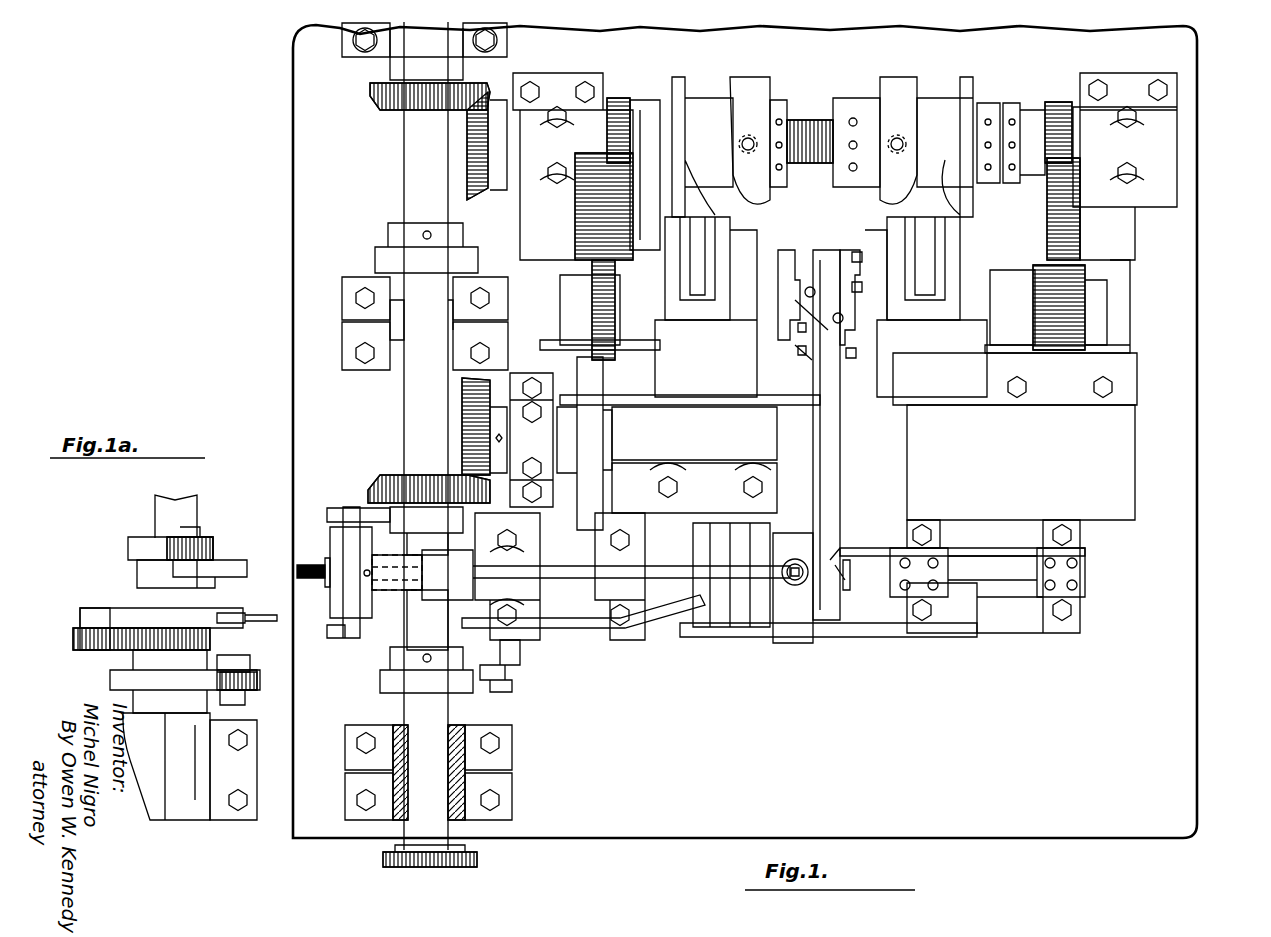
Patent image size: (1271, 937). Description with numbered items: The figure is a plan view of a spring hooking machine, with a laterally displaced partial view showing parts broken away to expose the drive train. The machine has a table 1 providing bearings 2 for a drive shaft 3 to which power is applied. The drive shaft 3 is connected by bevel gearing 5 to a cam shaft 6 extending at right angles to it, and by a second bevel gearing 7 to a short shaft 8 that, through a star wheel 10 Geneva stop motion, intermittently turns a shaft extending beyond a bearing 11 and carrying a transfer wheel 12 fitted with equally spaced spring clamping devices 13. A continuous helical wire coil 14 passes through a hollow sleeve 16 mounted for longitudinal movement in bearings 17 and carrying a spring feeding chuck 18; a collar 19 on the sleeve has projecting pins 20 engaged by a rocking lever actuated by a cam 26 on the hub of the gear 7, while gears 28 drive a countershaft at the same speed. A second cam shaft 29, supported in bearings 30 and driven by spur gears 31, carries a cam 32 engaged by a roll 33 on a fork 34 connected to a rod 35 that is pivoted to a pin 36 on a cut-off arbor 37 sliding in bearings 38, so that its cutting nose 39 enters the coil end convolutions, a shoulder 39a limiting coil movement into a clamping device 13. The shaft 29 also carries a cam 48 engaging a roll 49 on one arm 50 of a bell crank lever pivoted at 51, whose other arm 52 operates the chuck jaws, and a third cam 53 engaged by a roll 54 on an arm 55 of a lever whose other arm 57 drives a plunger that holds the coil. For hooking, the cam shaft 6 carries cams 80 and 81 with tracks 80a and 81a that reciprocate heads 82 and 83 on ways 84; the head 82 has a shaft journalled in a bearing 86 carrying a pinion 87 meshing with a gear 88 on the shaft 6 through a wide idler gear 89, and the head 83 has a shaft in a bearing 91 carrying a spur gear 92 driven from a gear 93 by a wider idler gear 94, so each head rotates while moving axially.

In FIG. 1, the table 1 is at (1188, 720).
In FIG. 1, the bearings 2 is at (500, 770).
In FIG. 1, the drive shaft 3 is at (365, 860).
In FIG. 1, the bevel gearing 5 is at (385, 110).
In FIG. 1, the cam shaft 6 is at (802, 135).
In FIG. 1, the bevel gearing 7 is at (375, 495).
In FIG. 1, the short shaft 8 is at (465, 418).
In FIG. 1, the star wheel 10 is at (597, 470).
In FIG. 1, the bearing 11 is at (745, 460).
In FIG. 1, the transfer wheel 12 is at (828, 462).
In FIG. 1, the spring clamping devices 13 is at (832, 335).
In FIG. 1, the helical wire coil 14 is at (300, 562).
In FIG. 1, the hollow sleeve 16 is at (385, 620).
In FIG. 1, the bearings 17 is at (482, 565).
In FIG. 1, the spring feeding chuck 18 is at (748, 620).
In FIG. 1, the collar 19 is at (335, 545).
In FIG. 1, the projecting pins 20 is at (345, 540).
In FIG. 1, the cam 26 is at (393, 515).
In FIG. 1, the gears 28 is at (478, 860).
In FIG. 1A, the second cam shaft 29 is at (168, 505).
In FIG. 1A, the bearings 30 is at (125, 718).
In FIG. 1, the spur gears 31 is at (378, 258).
In FIG. 1A, the cam 32 is at (160, 638).
In FIG. 1A, the roll 33 is at (95, 620).
In FIG. 1A, the fork 34 is at (100, 608).
In FIG. 1, the rod 35 is at (935, 637).
In FIG. 1A, the rod 35 is at (265, 614).
In FIG. 1, the pin 36 is at (975, 610).
In FIG. 1, the cut-off arbor 37 is at (1015, 577).
In FIG. 1, the bearings 38 is at (925, 560).
In FIG. 1, the cutting nose 39 is at (842, 580).
In FIG. 1, the shoulder 39a is at (848, 552).
In FIG. 1A, the cam 48 is at (113, 680).
In FIG. 1A, the roll 49 is at (242, 700).
In FIG. 1A, the arm 50 is at (240, 675).
In FIG. 1, the pivot 51 is at (512, 688).
In FIG. 1, the arm 52 is at (625, 628).
In FIG. 1A, the third cam 53 is at (143, 532).
In FIG. 1A, the roll 54 is at (205, 540).
In FIG. 1A, the arm 55 is at (228, 565).
In FIG. 1, the arm 57 is at (753, 575).
In FIG. 1, the cam 80 is at (905, 85).
In FIG. 1, the track 80a is at (942, 100).
In FIG. 1, the cam 81 is at (755, 83).
In FIG. 1, the track 81a is at (705, 108).
In FIG. 1, the head 82 is at (905, 340).
In FIG. 1, the head 83 is at (690, 377).
In FIG. 1, the ways 84 is at (1068, 385).
In FIG. 1, the bearing 86 is at (1048, 307).
In FIG. 1, the pinion 87 is at (1130, 350).
In FIG. 1, the gear 88 is at (1058, 108).
In FIG. 1, the idler gear 89 is at (1075, 233).
In FIG. 1, the bearing 91 is at (648, 150).
In FIG. 1, the spur gear 92 is at (598, 298).
In FIG. 1, the gear 93 is at (626, 100).
In FIG. 1, the idler gear 94 is at (580, 203).